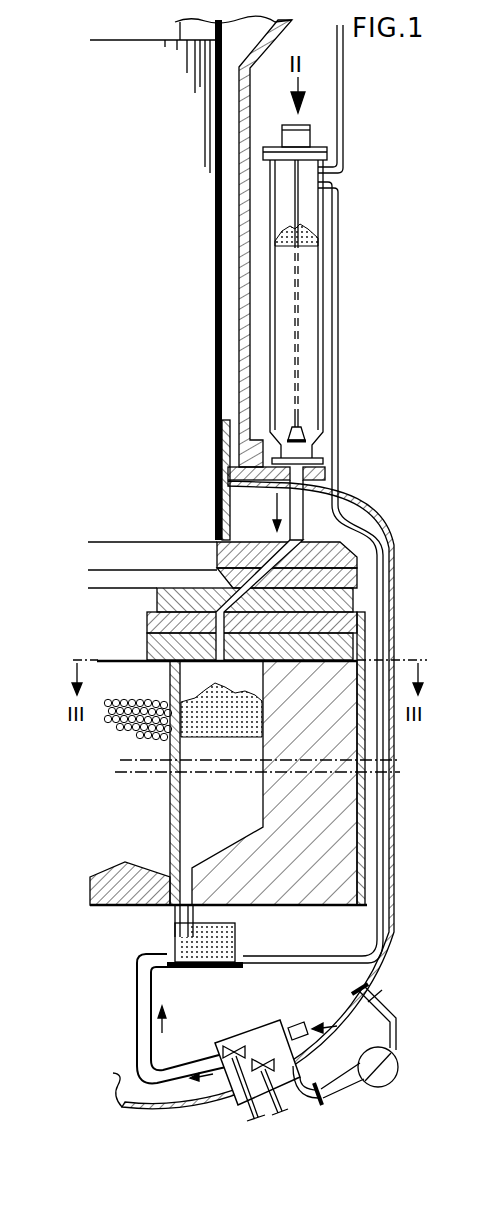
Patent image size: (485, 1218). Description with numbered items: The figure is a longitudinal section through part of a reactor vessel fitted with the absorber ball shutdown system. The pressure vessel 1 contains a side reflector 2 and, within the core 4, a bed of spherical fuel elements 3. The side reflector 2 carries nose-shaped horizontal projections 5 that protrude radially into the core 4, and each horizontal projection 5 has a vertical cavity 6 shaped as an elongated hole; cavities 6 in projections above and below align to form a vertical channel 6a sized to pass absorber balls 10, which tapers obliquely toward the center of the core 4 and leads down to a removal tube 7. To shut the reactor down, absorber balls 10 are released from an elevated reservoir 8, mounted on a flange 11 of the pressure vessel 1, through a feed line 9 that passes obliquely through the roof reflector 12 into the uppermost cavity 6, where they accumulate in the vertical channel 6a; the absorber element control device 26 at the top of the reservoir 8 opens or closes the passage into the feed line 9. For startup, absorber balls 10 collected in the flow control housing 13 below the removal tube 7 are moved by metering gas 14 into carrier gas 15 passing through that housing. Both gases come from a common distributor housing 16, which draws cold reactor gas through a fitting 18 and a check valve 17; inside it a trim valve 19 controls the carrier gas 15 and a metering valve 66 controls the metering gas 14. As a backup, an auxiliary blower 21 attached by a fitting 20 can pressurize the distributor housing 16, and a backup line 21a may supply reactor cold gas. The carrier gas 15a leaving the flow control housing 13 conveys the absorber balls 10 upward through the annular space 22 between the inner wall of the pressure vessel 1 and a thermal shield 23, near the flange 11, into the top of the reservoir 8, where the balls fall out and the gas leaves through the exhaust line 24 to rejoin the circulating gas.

The pressure vessel 1 is at (395, 589).
The side reflector 2 is at (337, 790).
The spherical fuel elements 3 is at (152, 707).
The core 4 is at (117, 762).
The horizontal projection 5 is at (327, 865).
The vertical cavity 6 is at (254, 690).
The vertical channel 6a is at (223, 823).
The removal tube 7 is at (188, 917).
The elevated reservoir 8 is at (272, 193).
The feed line 9 is at (296, 530).
The absorber balls 10 is at (300, 232).
The flange 11 is at (320, 482).
The roof reflector 12 is at (406, 622).
The flow control housing 13 is at (222, 933).
The metering gas 14 is at (137, 972).
The carrier gas 15 is at (137, 1036).
The carrier gas leaving housing 15a is at (340, 333).
The distributor housing 16 is at (252, 1040).
The check valve 17 is at (290, 1027).
The fitting 18 is at (316, 1022).
The trim valve 19 is at (230, 1048).
The fitting 20 is at (305, 1097).
The auxiliary blower 21 is at (391, 1067).
The backup line 21a is at (397, 1037).
The annular space 22 is at (372, 841).
The thermal shield 23 is at (364, 812).
The exhaust line 24 is at (344, 58).
The absorber element control device 26 is at (308, 137).
The metering valve 66 is at (268, 1059).